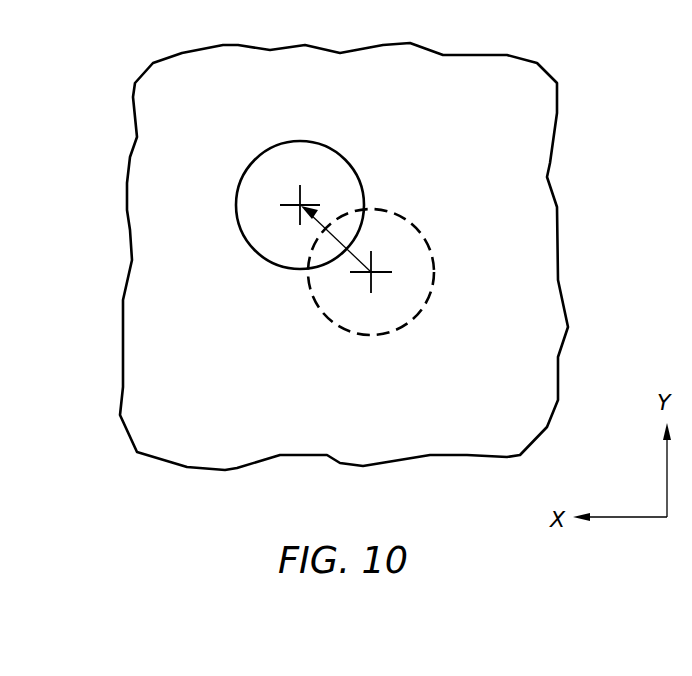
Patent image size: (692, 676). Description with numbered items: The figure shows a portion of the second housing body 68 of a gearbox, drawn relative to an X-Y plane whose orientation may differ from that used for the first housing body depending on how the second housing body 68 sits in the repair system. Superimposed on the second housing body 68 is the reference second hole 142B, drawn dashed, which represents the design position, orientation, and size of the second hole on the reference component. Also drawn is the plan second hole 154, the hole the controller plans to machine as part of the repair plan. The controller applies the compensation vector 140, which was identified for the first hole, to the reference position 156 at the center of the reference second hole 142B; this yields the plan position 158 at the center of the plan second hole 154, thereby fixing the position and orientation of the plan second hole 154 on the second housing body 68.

The second housing body 68 is at (527, 142).
The compensation vector 140 is at (362, 209).
The reference second hole 142B is at (393, 300).
The plan second hole 154 is at (268, 235).
The reference position 156 is at (370, 274).
The plan position 158 is at (312, 204).